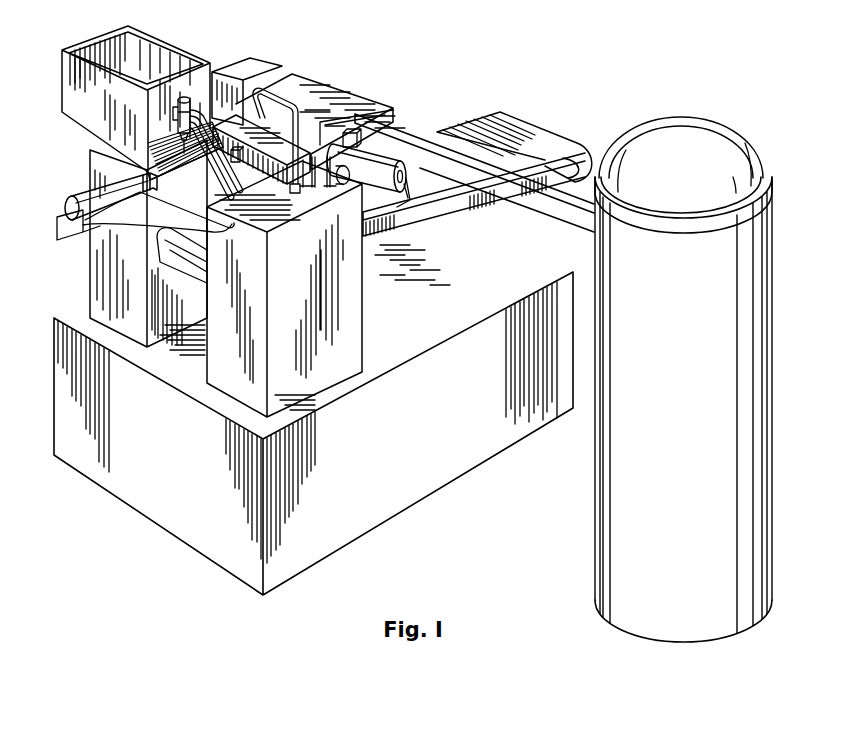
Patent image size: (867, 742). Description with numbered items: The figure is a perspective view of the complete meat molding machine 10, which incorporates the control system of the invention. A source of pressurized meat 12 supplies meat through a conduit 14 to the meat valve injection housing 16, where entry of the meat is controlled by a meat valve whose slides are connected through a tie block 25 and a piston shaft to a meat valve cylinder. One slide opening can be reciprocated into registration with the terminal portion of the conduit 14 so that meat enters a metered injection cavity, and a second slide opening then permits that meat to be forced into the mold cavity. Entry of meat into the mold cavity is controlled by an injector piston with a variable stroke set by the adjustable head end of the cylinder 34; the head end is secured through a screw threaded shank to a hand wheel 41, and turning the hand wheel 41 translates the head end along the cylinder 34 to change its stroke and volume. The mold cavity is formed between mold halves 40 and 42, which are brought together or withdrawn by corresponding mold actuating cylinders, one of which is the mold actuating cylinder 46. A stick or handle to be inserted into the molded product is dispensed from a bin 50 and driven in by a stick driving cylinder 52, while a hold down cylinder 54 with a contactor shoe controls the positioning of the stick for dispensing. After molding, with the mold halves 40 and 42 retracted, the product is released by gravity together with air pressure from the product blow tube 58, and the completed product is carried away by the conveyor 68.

The meat molding machine 10 is at (333, 82).
The source of pressurized meat 12 is at (698, 130).
The conduit 14 is at (552, 205).
The meat valve injection housing 16 is at (373, 110).
The tie block 25 is at (245, 84).
The cylinder 34 is at (378, 163).
The mold half 40 is at (243, 125).
The hand wheel 41 is at (412, 174).
The mold half 42 is at (331, 105).
The mold actuating cylinder 46 is at (341, 186).
The bin 50 is at (152, 44).
The stick driving cylinder 52 is at (93, 198).
The hold down cylinder 54 is at (191, 96).
The product blow tube 58 is at (278, 90).
The conveyor 68 is at (516, 136).